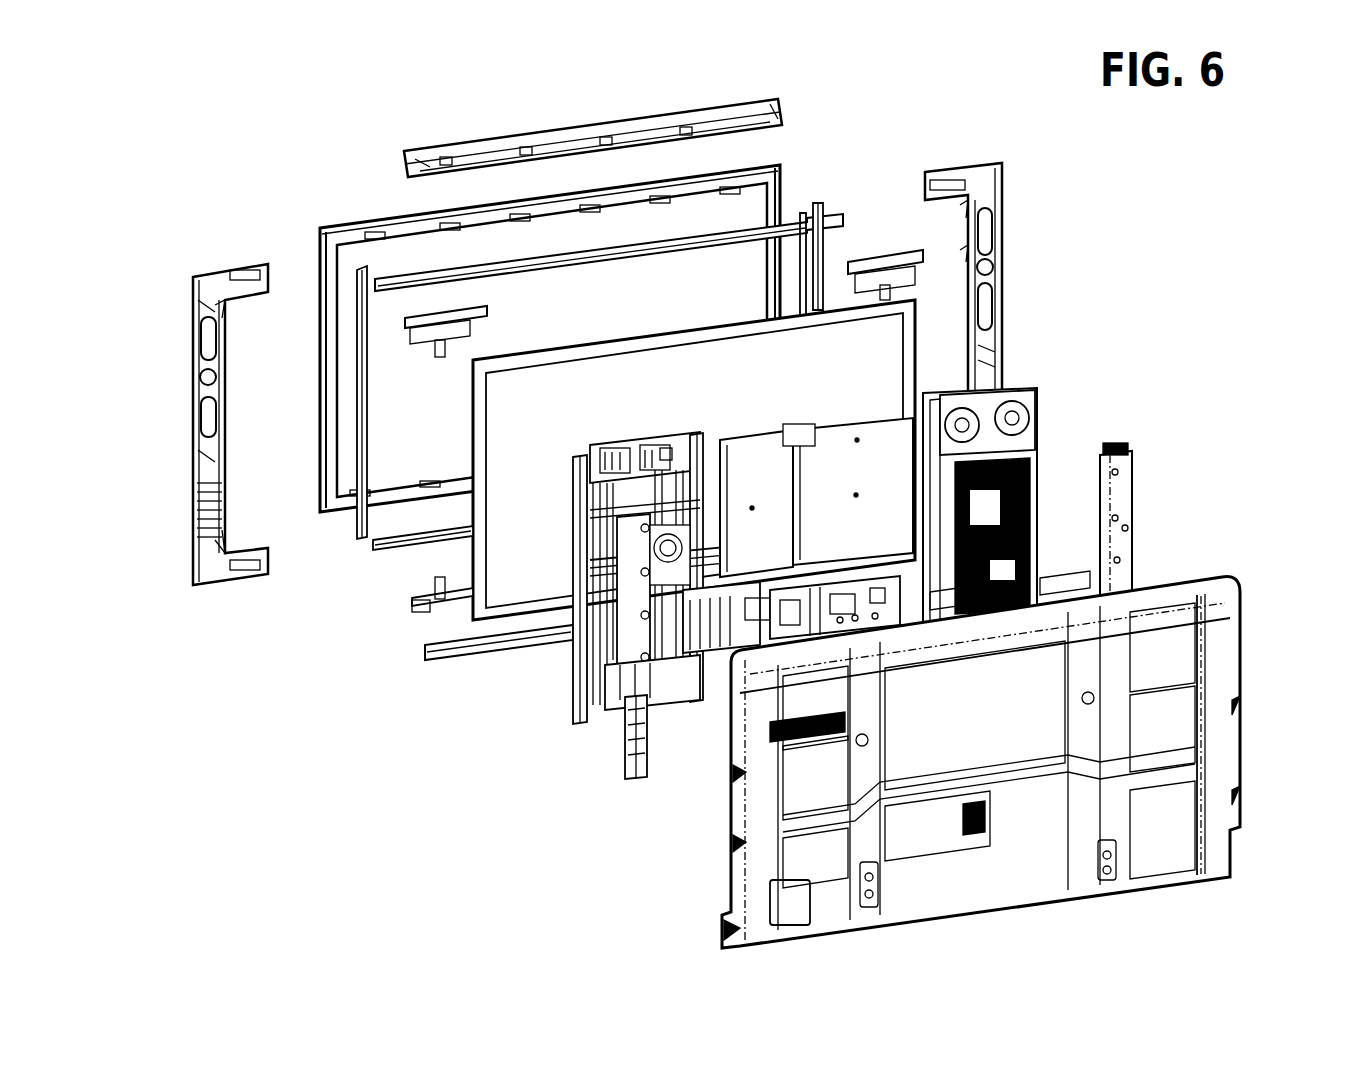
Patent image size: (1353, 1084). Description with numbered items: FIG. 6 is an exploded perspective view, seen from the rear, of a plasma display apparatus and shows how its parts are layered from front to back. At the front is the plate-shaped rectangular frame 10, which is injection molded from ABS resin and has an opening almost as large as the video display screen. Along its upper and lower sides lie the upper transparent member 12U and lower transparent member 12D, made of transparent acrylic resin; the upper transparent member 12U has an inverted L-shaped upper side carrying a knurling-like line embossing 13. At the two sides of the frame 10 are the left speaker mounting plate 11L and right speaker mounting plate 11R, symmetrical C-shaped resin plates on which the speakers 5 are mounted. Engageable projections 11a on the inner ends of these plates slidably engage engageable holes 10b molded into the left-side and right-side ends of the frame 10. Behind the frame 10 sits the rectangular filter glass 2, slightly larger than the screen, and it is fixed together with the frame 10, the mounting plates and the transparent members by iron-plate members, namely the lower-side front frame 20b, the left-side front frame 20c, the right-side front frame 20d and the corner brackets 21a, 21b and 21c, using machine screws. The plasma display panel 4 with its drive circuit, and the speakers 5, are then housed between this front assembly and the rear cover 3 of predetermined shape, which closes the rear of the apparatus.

The filter glass 2 is at (875, 348).
The rear cover 3 is at (1212, 685).
The plasma display panel 4 is at (868, 445).
The speakers 5 is at (1127, 505).
The frame 10 is at (783, 172).
The engageable holes 10b is at (320, 258).
The right speaker mounting plate 11R is at (193, 447).
The left speaker mounting plate 11L is at (1003, 268).
The engageable projections 11a is at (225, 328).
The upper transparent member 12U is at (473, 152).
The lower transparent member 12D is at (493, 657).
The line embossing 13 is at (545, 140).
The lower-side front frame 20b is at (410, 555).
The left-side front frame 20c is at (822, 253).
The right-side front frame 20d is at (370, 428).
The corner bracket 21a is at (487, 312).
The corner bracket 21b is at (885, 258).
The corner bracket 21c is at (433, 622).